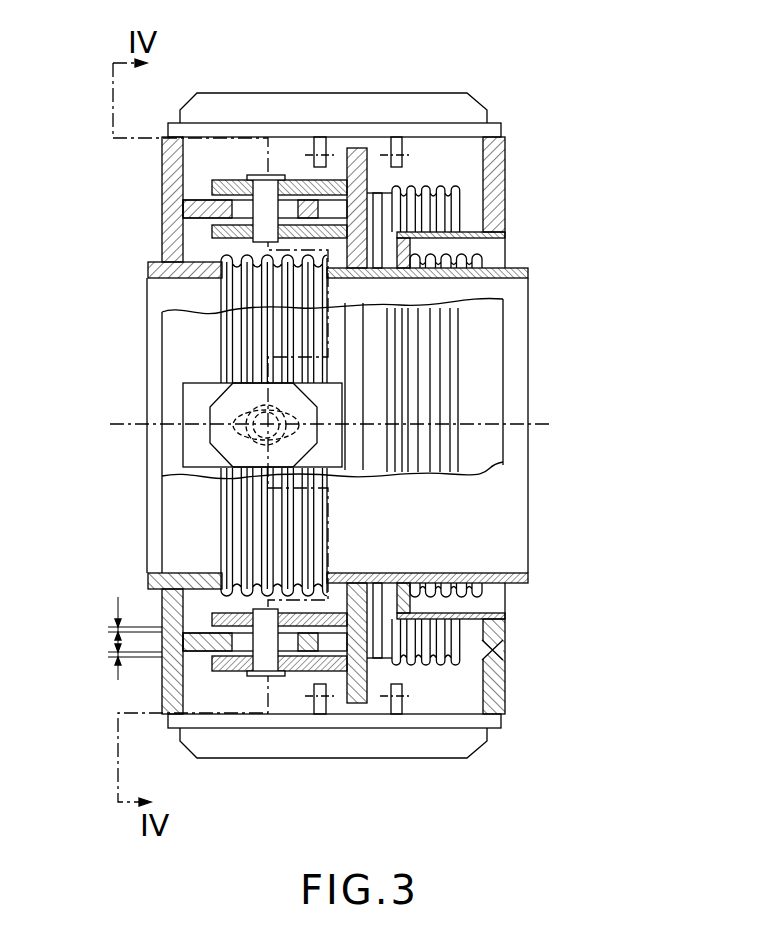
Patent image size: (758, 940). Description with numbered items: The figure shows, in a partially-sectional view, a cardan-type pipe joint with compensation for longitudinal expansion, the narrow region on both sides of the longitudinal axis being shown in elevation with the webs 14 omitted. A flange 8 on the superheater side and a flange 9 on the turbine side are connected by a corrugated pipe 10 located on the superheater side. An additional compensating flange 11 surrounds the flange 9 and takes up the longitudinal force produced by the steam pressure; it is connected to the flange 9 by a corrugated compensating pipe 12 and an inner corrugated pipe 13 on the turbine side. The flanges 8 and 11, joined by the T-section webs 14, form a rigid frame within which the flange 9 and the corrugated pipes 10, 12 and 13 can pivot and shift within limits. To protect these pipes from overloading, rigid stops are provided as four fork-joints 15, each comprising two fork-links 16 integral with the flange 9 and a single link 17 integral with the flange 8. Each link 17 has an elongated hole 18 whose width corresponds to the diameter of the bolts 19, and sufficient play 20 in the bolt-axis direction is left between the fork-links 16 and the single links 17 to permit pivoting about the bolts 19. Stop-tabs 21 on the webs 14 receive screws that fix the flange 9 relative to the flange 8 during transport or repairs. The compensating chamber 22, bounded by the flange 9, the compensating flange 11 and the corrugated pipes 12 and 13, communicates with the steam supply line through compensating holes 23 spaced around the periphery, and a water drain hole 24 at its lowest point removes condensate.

The flange 8 is at (173, 182).
The flange 9 is at (353, 148).
The corrugated pipe 10 is at (240, 287).
The compensating flange 11 is at (503, 163).
The corrugated compensating pipe 12 is at (445, 213).
The inner corrugated pipe 13 is at (473, 260).
The webs 14 is at (243, 110).
The fork-joints 15 is at (228, 180).
The fork-links 16 is at (310, 227).
The single link 17 is at (215, 208).
The elongated holes 18 is at (285, 642).
The bolts 19 is at (263, 193).
The play 20 is at (110, 652).
The stop-tabs 21 is at (393, 707).
The compensating chamber 22 is at (373, 217).
The compensating holes 23 is at (382, 282).
The water drain hole 24 is at (505, 653).